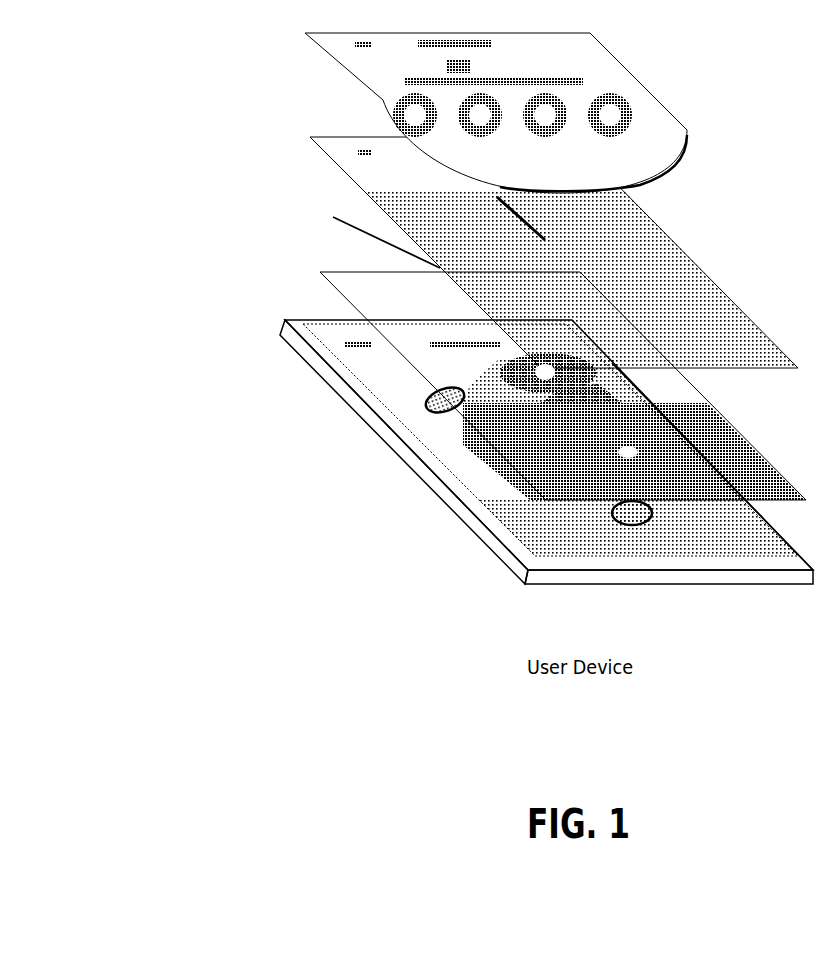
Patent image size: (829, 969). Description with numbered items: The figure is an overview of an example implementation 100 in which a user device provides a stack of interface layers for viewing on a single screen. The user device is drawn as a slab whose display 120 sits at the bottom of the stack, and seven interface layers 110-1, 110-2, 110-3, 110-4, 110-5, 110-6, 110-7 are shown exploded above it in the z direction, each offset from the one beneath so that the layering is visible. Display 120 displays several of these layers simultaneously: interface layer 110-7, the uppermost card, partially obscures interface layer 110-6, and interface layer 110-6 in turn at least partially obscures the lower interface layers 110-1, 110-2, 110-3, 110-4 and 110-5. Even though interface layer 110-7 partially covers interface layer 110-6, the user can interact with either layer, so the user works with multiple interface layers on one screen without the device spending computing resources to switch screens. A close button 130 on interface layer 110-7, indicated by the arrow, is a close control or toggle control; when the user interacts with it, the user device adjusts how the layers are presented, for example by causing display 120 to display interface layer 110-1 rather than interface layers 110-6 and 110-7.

The example implementation 100 is at (131, 39).
The interface layer 110-1 is at (528, 538).
The interface layer 110-2 is at (503, 441).
The interface layer 110-3 is at (503, 360).
The interface layer 110-4 is at (342, 280).
The interface layer 110-5 is at (350, 222).
The interface layer 110-6 is at (354, 152).
The interface layer 110-7 is at (360, 70).
The display 120 is at (670, 553).
The close button 130 is at (478, 68).